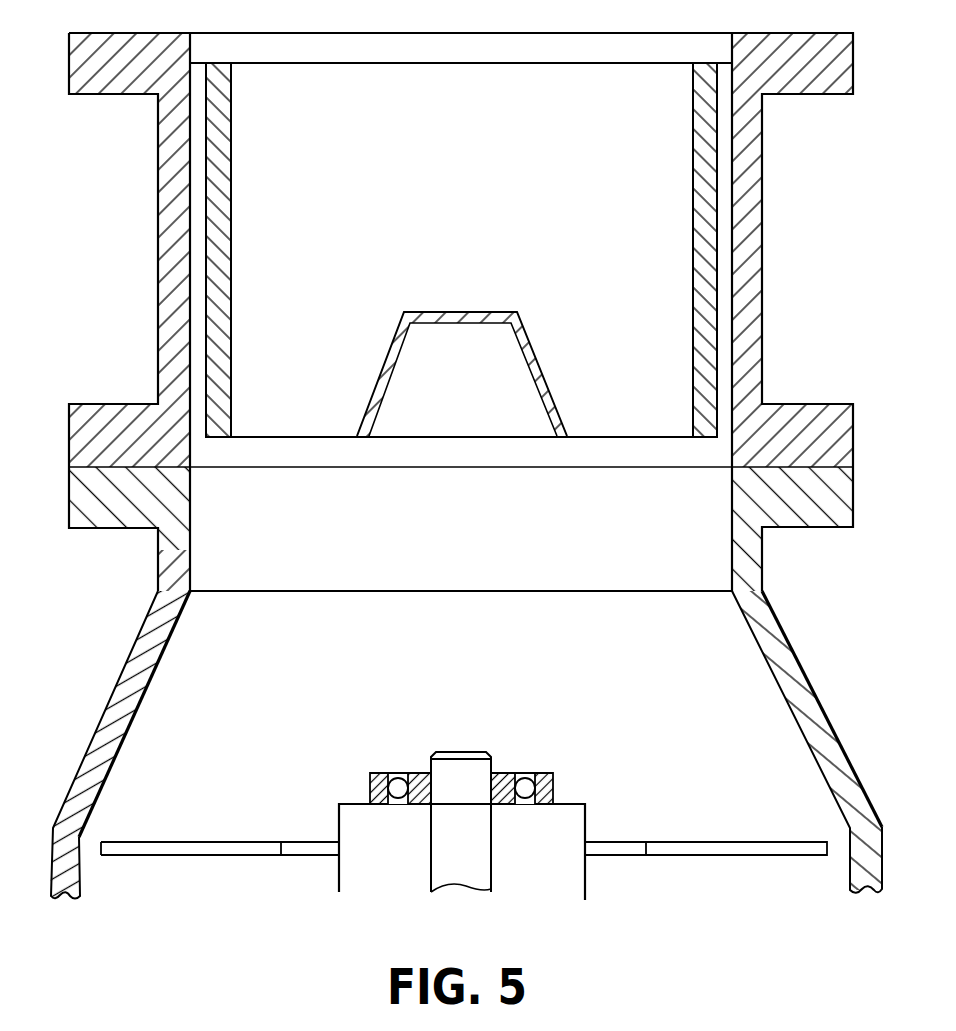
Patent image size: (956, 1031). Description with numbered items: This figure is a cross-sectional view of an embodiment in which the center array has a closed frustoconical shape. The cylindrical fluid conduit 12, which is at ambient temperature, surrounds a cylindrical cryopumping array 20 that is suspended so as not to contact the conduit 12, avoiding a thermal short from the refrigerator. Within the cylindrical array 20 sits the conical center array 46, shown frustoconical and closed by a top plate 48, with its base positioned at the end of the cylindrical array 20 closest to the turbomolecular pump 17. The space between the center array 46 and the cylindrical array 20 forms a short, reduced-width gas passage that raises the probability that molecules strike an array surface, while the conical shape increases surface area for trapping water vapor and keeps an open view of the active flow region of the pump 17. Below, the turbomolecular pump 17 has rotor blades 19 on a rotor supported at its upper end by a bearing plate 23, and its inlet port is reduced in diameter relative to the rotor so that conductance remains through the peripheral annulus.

The cylindrical fluid conduit 12 is at (762, 278).
The turbomolecular pump 17 is at (818, 698).
The rotor blades 19 is at (693, 838).
The cylindrical cryopumping array 20 is at (232, 190).
The bearing plate 23 is at (508, 772).
The center array 46 is at (525, 333).
The top plate 48 is at (440, 323).